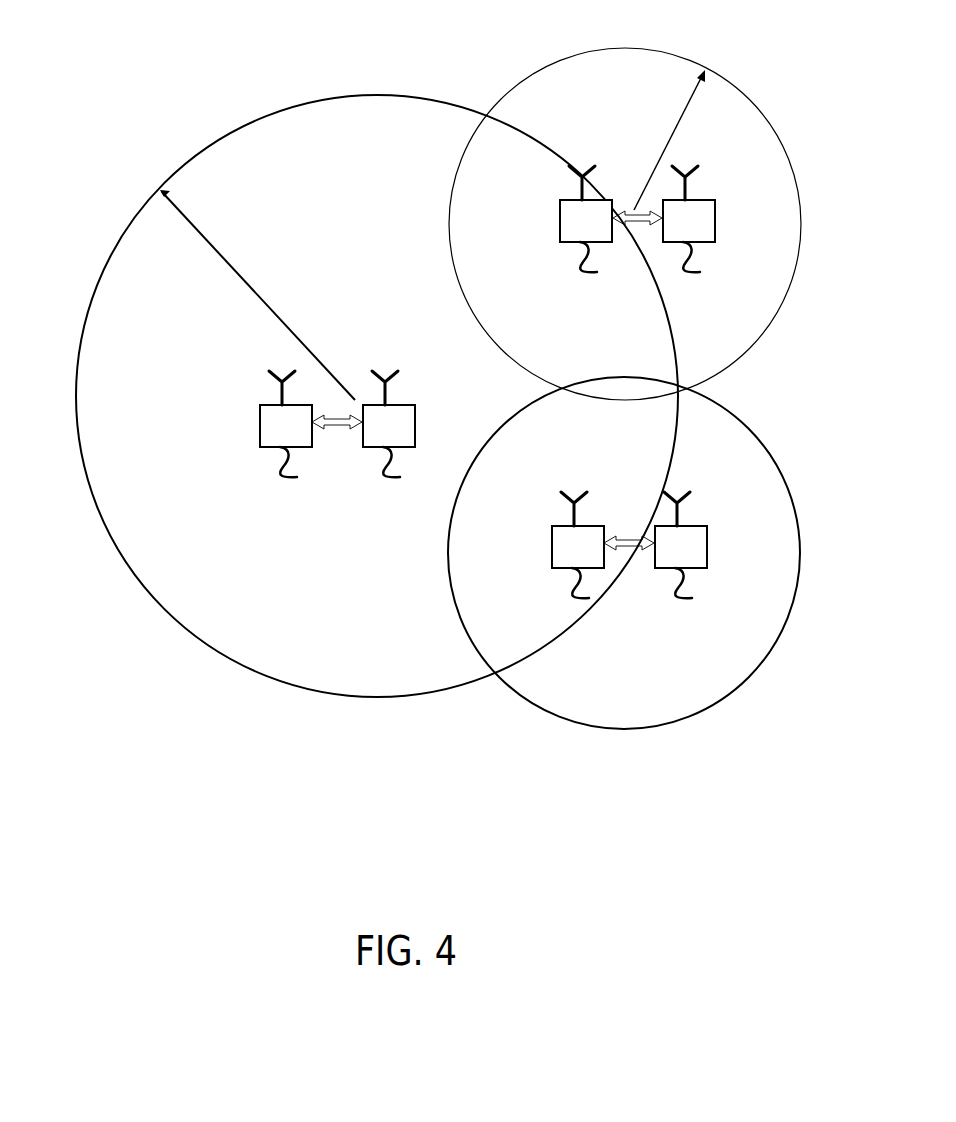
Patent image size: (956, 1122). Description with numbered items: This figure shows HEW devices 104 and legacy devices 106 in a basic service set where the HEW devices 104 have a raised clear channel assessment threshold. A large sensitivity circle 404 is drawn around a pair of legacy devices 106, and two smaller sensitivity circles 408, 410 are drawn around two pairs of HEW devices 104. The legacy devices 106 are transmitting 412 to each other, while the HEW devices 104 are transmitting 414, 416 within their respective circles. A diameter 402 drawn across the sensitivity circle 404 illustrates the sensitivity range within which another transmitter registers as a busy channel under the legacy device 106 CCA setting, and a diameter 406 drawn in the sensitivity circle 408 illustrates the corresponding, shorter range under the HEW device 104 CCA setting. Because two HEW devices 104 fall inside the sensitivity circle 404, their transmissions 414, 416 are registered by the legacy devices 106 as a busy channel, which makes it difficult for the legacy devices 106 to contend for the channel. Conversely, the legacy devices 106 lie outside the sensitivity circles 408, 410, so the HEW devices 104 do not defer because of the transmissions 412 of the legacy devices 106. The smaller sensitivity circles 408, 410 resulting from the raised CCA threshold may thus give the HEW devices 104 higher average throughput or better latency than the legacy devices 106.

The HEW device 104 is at (634, 403).
The legacy device 106 is at (337, 445).
The diameter 402 is at (176, 224).
The sensitivity circle 404 is at (193, 148).
The diameter 406 is at (688, 88).
The sensitivity circle 408 is at (551, 55).
The sensitivity circle 410 is at (768, 433).
The transmission 412 is at (337, 432).
The transmission 414 is at (647, 225).
The transmission 416 is at (630, 552).